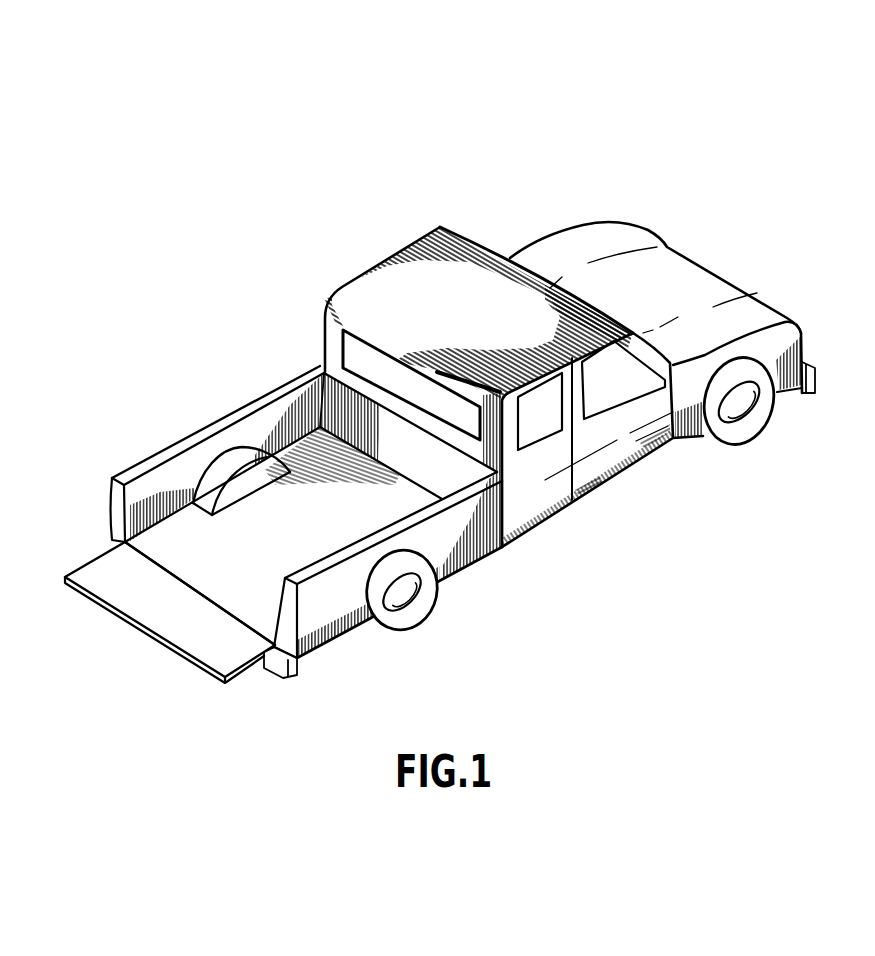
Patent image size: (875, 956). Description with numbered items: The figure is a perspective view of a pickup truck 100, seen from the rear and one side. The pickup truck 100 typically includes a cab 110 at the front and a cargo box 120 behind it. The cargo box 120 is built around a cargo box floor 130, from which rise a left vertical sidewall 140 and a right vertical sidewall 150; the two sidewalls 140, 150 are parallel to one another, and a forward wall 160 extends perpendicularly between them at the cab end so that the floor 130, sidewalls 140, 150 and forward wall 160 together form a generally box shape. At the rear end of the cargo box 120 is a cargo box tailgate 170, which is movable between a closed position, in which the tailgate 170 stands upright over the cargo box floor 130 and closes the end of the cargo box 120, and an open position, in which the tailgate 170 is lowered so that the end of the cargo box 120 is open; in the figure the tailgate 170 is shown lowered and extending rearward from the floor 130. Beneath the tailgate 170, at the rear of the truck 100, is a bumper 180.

The pickup truck 100 is at (437, 397).
The cab 110 is at (441, 227).
The cargo box 120 is at (347, 627).
The cargo box floor 130 is at (323, 527).
The left vertical sidewall 140 is at (458, 566).
The right vertical sidewall 150 is at (156, 481).
The forward wall 160 is at (340, 407).
The cargo box tailgate 170 is at (160, 612).
The bumper 180 is at (268, 665).